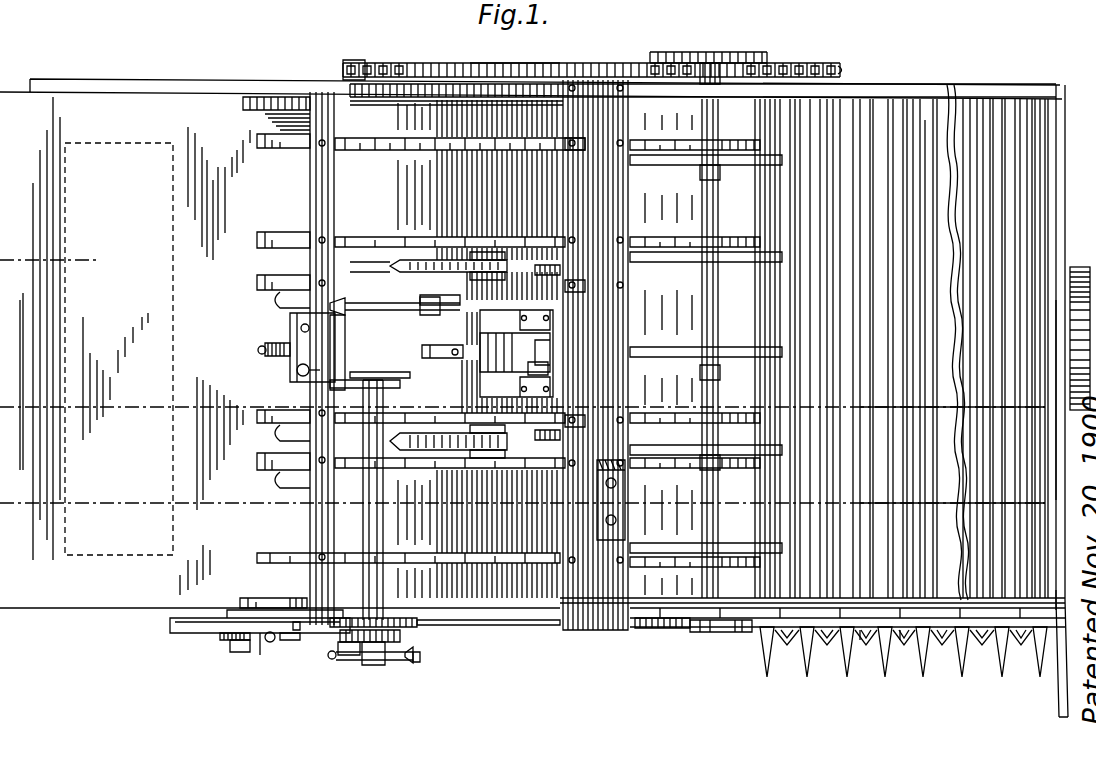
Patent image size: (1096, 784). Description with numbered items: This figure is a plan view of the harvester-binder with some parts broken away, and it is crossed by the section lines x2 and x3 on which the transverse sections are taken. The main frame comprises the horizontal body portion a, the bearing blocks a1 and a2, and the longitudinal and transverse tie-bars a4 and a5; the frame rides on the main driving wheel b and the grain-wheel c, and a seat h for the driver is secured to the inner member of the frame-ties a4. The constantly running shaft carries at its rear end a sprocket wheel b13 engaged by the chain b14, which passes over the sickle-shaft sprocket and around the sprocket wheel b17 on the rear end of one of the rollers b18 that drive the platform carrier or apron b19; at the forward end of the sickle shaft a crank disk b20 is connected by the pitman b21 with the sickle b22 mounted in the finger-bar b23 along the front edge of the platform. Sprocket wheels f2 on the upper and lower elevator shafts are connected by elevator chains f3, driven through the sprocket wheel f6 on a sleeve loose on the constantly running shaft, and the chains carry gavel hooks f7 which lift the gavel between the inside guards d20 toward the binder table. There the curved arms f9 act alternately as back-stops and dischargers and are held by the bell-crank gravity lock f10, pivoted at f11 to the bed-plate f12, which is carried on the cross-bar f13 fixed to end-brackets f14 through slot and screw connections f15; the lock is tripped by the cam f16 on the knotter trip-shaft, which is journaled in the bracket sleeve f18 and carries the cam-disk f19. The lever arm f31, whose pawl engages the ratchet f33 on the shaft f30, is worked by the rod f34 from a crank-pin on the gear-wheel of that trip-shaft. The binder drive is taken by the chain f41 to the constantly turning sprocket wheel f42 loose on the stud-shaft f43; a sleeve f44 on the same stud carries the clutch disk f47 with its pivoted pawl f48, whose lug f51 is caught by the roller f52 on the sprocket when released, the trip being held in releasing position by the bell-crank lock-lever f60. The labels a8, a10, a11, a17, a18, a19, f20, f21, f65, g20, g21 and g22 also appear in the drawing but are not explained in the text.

The horizontal body portion of main frame a is at (780, 63).
The bearing blocks a1 is at (772, 195).
The bearing block a2 is at (710, 213).
The longitudinal tie-bars a4 is at (610, 193).
The transverse tie-bars a5 is at (545, 349).
The cross bars a8 is at (748, 166).
The upper chain a10 is at (688, 53).
The sprocket a11 is at (722, 48).
The rack guide block a17 is at (545, 353).
The cross bars a18 is at (740, 145).
The post brackets a19 is at (576, 143).
The main driving wheel b is at (1033, 467).
The sprocket wheel b13 is at (412, 63).
The chain b14 is at (520, 63).
The sprocket wheel b17 is at (610, 63).
The rollers b18 is at (840, 74).
The platform carrier or apron b19 is at (919, 342).
The crank disk b20 is at (675, 628).
The pitman b21 is at (728, 632).
The sickle b22 is at (820, 665).
The finger-bar b23 is at (925, 657).
The grain-wheel c is at (1083, 338).
The inside guards d20 is at (392, 150).
The sprocket wheels f2 is at (400, 472).
The elevator chains f3 is at (420, 432).
The sprocket wheel f6 is at (420, 624).
The gavel carrying hook-like arms f7 is at (438, 262).
The back stop and discharge arms f9 is at (412, 312).
The bell-crank gravity lock f10 is at (365, 334).
The pivot f11 is at (345, 320).
The bed-plate f12 is at (255, 345).
The cross-bar f13 is at (318, 200).
The end-brackets f14 is at (292, 100).
The slot and screw connections f15 is at (300, 328).
The cam f16 is at (296, 367).
The bracket sleeve f18 is at (378, 548).
The cam-disk f19 is at (390, 368).
The slider f20 is at (430, 350).
The spring f21 is at (263, 341).
The shaft f30 is at (240, 654).
The lever arm f31 is at (190, 620).
The ratchet f33 is at (225, 642).
The rod f34 is at (266, 651).
The chain f41 is at (330, 658).
The sprocket wheel f42 is at (390, 660).
The stud-shaft f43 is at (370, 666).
The sleeve f44 is at (405, 630).
The clutch disk f47 is at (418, 655).
The bell-crank clutch pawl f48 is at (325, 645).
The projecting lug f51 is at (370, 655).
The roller or lug f52 is at (350, 655).
The bell-crank lock-lever f60 is at (293, 633).
The stop f65 is at (305, 622).
The box frame g20 is at (495, 330).
The inner block g21 is at (515, 352).
The latch g22 is at (548, 365).
The seat h is at (616, 483).
The section line X2 X2 x2 is at (952, 418).
The section line X3 X3 x3 is at (952, 514).